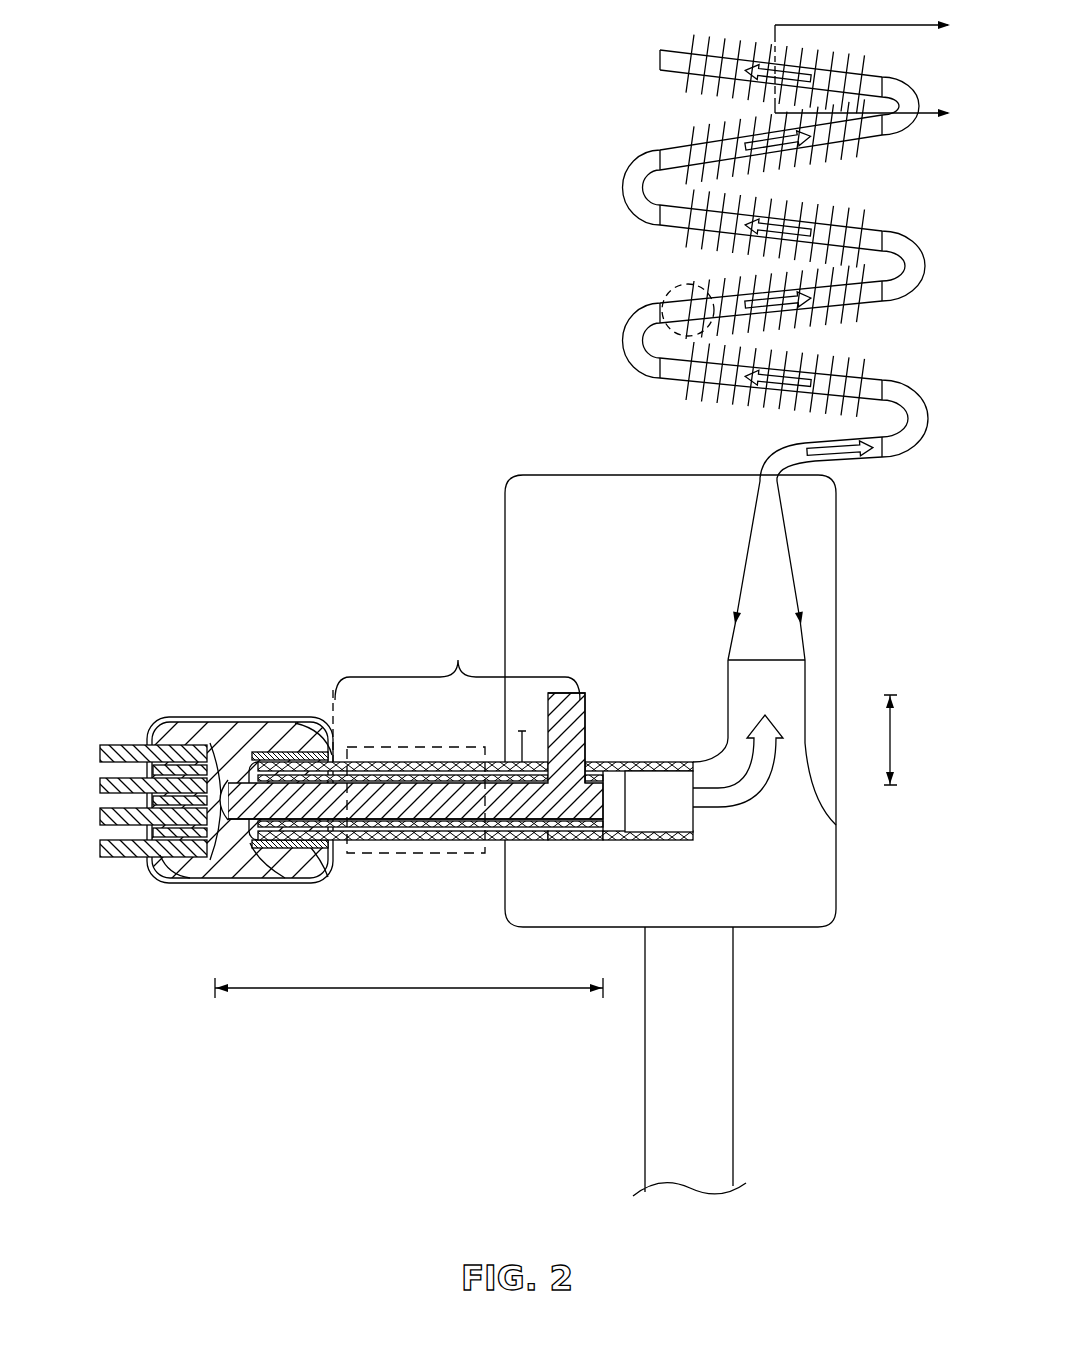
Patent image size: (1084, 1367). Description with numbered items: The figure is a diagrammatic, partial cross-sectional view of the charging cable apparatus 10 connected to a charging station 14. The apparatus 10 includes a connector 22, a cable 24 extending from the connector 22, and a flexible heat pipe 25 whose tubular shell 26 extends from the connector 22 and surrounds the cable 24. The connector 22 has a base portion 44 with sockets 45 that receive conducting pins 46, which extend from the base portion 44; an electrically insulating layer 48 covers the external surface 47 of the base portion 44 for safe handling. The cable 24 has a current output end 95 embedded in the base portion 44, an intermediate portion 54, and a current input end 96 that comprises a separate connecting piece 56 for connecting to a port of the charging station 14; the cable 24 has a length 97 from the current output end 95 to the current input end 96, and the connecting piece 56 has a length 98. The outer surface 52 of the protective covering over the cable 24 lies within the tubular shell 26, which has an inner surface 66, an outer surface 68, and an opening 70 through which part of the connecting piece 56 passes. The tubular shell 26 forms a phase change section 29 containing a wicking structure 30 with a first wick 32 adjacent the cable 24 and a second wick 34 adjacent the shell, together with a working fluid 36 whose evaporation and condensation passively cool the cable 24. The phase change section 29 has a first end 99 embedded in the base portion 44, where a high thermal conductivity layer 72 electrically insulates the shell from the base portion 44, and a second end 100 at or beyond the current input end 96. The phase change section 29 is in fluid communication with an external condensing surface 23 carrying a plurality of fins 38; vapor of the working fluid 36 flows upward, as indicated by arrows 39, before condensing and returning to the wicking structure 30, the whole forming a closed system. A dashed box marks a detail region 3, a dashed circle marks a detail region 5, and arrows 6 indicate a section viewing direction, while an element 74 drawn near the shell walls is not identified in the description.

The detail region of FIG. 3 is at (405, 747).
The detail region of FIG. 5 is at (672, 292).
The section line of FIG. 6 is at (875, 71).
The charging cable apparatus 10 is at (238, 622).
The charging station 14 is at (505, 556).
The connector 22 is at (170, 726).
The external condensing surface 23 is at (596, 210).
The cable 24 is at (208, 745).
The flexible heat pipe 25 is at (520, 738).
The tubular shell 26 is at (298, 750).
The phase change section 29 is at (456, 695).
The wicking structure 30 is at (455, 832).
The first wick 32 is at (530, 818).
The second wick 34 is at (627, 762).
The working fluid 36 is at (657, 783).
The fins 38 is at (690, 36).
The arrows 39 is at (852, 458).
The base portion 44 is at (287, 880).
The socket 45 is at (182, 740).
The conducting pin 46 is at (100, 752).
The external surface 47 is at (266, 718).
The electrically insulating layer 48 is at (230, 718).
The outer surface 52 is at (222, 862).
The intermediate portion 54 is at (403, 807).
The connecting piece 56 is at (573, 712).
The inner surface 66 is at (643, 840).
The outer surface 68 is at (593, 840).
The opening 70 is at (588, 756).
The high thermal conductivity layer 72 is at (322, 876).
The outer tube lower portion 74 is at (417, 837).
The current output end 95 is at (182, 873).
The current input end 96 is at (607, 793).
The length 97 is at (368, 988).
The length 98 is at (890, 738).
The first end 99 is at (262, 878).
The second end 100 is at (694, 762).